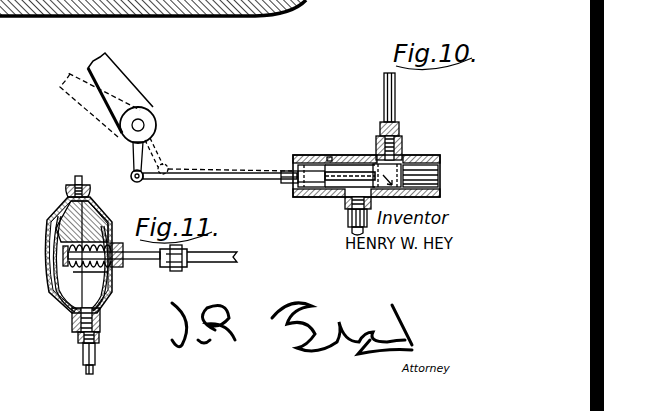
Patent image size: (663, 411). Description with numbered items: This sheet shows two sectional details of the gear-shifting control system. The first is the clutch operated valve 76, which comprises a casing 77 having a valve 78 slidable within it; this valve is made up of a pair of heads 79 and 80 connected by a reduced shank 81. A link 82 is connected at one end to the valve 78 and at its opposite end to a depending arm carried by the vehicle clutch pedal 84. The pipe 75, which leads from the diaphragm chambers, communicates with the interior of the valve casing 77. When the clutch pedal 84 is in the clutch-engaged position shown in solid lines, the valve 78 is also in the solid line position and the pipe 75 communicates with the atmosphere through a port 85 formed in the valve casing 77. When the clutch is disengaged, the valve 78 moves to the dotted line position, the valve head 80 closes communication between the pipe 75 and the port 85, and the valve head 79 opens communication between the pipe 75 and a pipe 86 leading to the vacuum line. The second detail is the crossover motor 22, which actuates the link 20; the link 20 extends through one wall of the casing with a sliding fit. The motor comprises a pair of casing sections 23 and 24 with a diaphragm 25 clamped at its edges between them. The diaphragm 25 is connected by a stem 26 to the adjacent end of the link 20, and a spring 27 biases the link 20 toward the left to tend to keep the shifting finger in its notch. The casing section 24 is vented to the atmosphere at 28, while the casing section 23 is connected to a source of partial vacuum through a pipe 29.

In FIG. 11, the link 20 is at (205, 263).
In FIG. 11, the crossover motor 22 is at (72, 183).
In FIG. 11, the casing section 23 is at (103, 218).
In FIG. 11, the casing section 24 is at (58, 214).
In FIG. 11, the diaphragm 25 is at (53, 283).
In FIG. 11, the stem 26 is at (143, 263).
In FIG. 11, the spring 27 is at (112, 231).
In FIG. 11, the vent 28 is at (61, 306).
In FIG. 11, the pipe 29 is at (83, 357).
In FIG. 10, the pipe 75 is at (350, 219).
In FIG. 10, the clutch operated valve 76 is at (425, 153).
In FIG. 10, the valve casing 77 is at (440, 165).
In FIG. 10, the valve 78 is at (440, 173).
In FIG. 10, the valve head 79 is at (440, 182).
In FIG. 10, the valve head 80 is at (308, 166).
In FIG. 10, the reduced shank 81 is at (351, 172).
In FIG. 10, the link 82 is at (214, 173).
In FIG. 10, the clutch pedal 84 is at (143, 107).
In FIG. 10, the port 85 is at (330, 157).
In FIG. 10, the pipe 86 is at (396, 121).